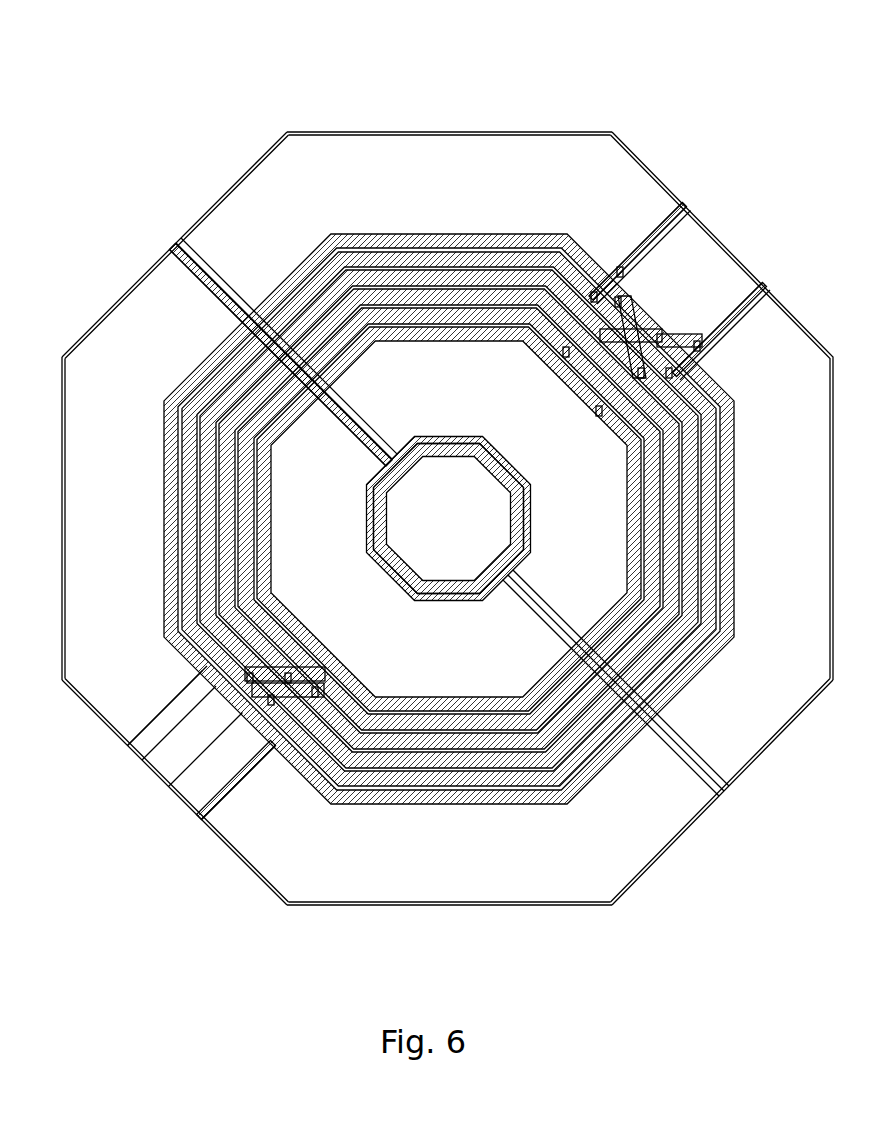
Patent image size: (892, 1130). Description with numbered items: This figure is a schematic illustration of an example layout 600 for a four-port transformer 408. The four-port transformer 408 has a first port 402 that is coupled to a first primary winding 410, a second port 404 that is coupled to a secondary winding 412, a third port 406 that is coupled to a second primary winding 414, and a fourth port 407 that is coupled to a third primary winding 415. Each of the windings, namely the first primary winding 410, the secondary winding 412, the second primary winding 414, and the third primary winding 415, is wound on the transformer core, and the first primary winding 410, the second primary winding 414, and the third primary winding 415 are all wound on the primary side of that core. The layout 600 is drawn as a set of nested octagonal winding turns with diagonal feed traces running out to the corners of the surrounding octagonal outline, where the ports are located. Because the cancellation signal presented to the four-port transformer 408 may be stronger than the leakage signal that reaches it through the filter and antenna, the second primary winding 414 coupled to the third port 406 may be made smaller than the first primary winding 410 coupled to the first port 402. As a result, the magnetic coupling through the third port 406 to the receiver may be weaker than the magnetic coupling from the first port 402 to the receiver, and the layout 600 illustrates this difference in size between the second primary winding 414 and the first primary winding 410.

The layout 600 is at (445, 427).
The first port 402 is at (720, 140).
The second port 404 is at (145, 835).
The third port 406 is at (750, 832).
The fourth port 407 is at (148, 205).
The four-port transformer 408 is at (462, 132).
The first primary winding 410 is at (734, 300).
The secondary winding 412 is at (143, 737).
The second primary winding 414 is at (722, 772).
The third primary winding 415 is at (182, 272).